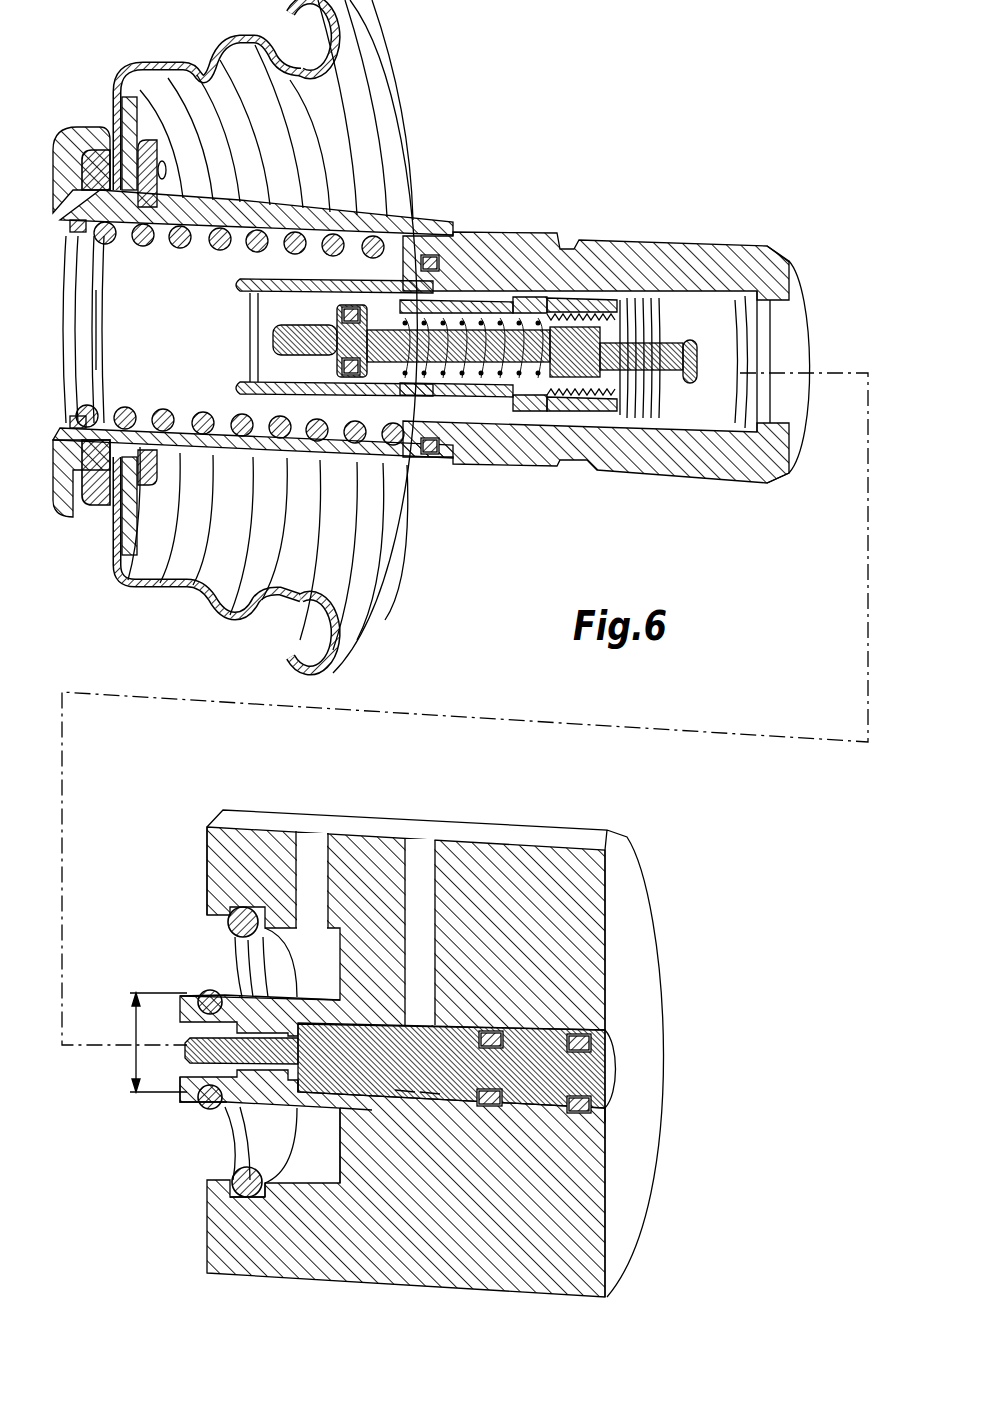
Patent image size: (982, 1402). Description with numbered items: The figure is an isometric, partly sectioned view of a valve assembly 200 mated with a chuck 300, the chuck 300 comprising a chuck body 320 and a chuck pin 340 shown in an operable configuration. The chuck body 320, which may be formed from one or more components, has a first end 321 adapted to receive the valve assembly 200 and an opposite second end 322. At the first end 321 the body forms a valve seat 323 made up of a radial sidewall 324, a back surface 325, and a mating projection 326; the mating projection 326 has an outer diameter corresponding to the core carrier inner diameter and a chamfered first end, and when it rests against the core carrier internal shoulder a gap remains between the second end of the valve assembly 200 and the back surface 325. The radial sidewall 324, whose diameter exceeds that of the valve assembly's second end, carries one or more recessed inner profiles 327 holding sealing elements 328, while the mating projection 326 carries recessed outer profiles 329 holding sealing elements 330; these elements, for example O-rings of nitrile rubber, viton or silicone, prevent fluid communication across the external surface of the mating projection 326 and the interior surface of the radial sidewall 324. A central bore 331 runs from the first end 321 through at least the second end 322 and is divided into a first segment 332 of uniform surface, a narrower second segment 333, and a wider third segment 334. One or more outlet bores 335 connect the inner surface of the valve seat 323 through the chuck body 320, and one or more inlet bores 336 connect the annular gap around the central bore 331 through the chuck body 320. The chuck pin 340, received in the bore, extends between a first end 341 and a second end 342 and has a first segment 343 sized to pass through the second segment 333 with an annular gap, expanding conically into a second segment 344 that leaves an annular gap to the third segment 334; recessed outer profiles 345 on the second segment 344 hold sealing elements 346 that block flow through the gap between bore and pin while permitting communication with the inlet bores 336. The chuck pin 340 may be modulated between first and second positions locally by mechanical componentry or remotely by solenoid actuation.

The valve assembly 200 is at (587, 188).
The chuck 300 is at (598, 820).
The chuck body 320 is at (507, 830).
The first end 321 is at (176, 909).
The second end 322 is at (697, 943).
The valve seat 323 is at (194, 1146).
The radial sidewall 324 is at (308, 1180).
The back surface 325 is at (345, 1180).
The mating projection 326 is at (372, 1130).
The recessed inner profile 327 is at (258, 1200).
The sealing element 328 is at (238, 1200).
The recessed outer profile 329 is at (200, 990).
The sealing element 330 is at (208, 988).
The central bore 331 is at (605, 1122).
The first segment 332 is at (208, 1105).
The second segment 333 is at (243, 1114).
The third segment 334 is at (250, 1164).
The outlet bore 335 is at (313, 834).
The inlet bore 336 is at (421, 840).
The chuck pin 340 is at (600, 1058).
The first end 341 is at (182, 1052).
The second end 342 is at (622, 1072).
The first segment 343 is at (405, 1120).
The second segment 344 is at (423, 1120).
The recessed outer profile 345 is at (590, 1130).
The sealing element 346 is at (597, 1124).